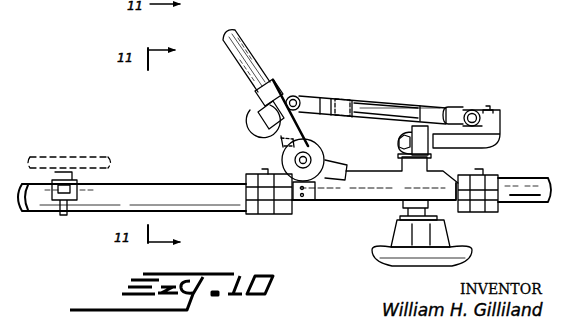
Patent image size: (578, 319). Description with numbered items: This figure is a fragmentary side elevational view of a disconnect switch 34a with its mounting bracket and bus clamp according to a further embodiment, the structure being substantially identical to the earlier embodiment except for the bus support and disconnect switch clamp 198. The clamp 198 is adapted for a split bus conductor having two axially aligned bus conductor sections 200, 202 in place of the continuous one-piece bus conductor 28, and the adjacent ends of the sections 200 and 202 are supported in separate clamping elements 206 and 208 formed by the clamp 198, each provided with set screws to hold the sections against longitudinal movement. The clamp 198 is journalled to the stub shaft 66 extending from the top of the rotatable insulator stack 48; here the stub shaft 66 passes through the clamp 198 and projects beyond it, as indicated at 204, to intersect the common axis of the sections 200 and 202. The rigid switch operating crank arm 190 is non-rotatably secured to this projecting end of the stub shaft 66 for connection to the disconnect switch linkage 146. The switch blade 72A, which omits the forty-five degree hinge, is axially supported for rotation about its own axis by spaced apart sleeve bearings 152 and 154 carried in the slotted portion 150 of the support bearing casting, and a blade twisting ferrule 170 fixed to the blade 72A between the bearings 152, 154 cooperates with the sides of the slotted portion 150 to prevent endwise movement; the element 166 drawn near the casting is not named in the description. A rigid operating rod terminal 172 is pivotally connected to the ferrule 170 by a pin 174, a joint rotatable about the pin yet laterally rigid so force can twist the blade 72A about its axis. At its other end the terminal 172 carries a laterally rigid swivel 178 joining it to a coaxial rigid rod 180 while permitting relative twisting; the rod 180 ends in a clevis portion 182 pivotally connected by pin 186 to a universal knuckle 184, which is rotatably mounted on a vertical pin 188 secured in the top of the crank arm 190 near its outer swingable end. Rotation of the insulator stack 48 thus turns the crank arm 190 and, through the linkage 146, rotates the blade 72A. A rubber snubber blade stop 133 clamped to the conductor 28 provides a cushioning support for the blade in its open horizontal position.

The switch blade 72A is at (243, 33).
The disconnect switch 34a is at (288, 82).
The sleeve bearing 152 is at (256, 94).
The blade twisting ferrule 170 is at (260, 112).
The slotted portion 150 is at (252, 128).
The sleeve bearing 154 is at (283, 140).
The hub wheel 166 is at (312, 152).
The pin 174 is at (299, 100).
The rigid operating rod terminal 172 is at (326, 98).
The laterally rigid swivel 178 is at (349, 100).
The coaxial rigid rod 180 is at (388, 106).
The disconnect switch linkage 146 is at (424, 95).
The clevis portion 182 is at (456, 108).
The pin 186 is at (476, 108).
The vertical pin 188 is at (494, 107).
The universal knuckle 184 is at (502, 118).
The rigid switch operating crank arm 190 is at (396, 142).
The projecting end of stub shaft 204 is at (436, 158).
The rubber snubber blade stop 133 is at (82, 182).
The bus conductor section 202 is at (151, 192).
The bus conductor 28 is at (92, 200).
The clamping element 208 is at (257, 214).
The bus support and disconnect switch clamp 198 is at (336, 204).
The stub shaft 66 is at (403, 206).
The insulator stack 48 is at (378, 263).
The clamping element 206 is at (483, 213).
The bus conductor section 200 is at (526, 203).